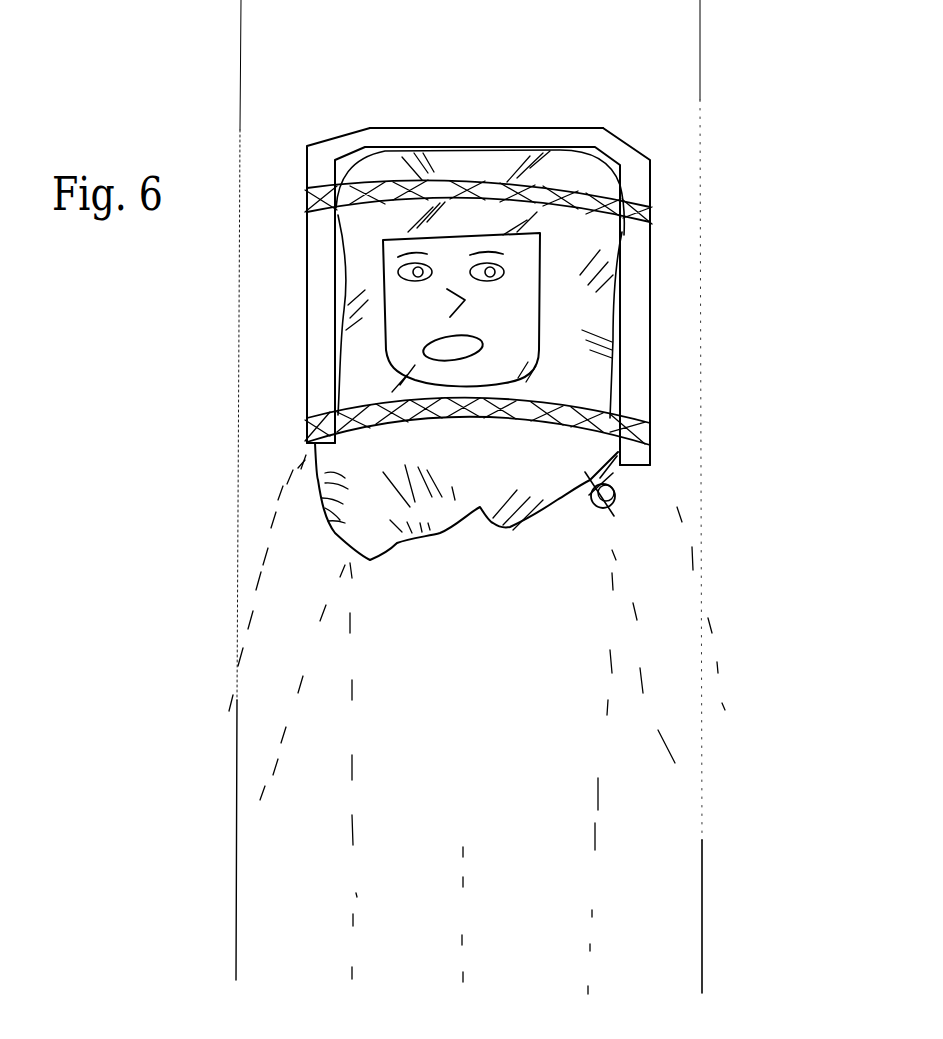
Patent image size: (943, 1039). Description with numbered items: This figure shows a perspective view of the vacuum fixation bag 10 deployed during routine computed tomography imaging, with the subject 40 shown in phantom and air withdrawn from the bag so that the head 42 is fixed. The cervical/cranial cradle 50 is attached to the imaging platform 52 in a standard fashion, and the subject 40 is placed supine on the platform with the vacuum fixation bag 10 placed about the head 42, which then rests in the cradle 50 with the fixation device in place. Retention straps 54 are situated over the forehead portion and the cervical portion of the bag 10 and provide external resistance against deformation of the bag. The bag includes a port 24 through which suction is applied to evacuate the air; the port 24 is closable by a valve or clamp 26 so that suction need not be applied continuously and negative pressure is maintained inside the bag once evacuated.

The vacuum fixation bag 10 is at (560, 320).
The port 24 is at (605, 508).
The valve or clamp 26 is at (617, 482).
The subject 40 is at (505, 741).
The head 42 is at (513, 347).
The cervical/cranial cradle 50 is at (320, 303).
The imaging platform 52 is at (486, 72).
The retention straps 54 is at (310, 205).